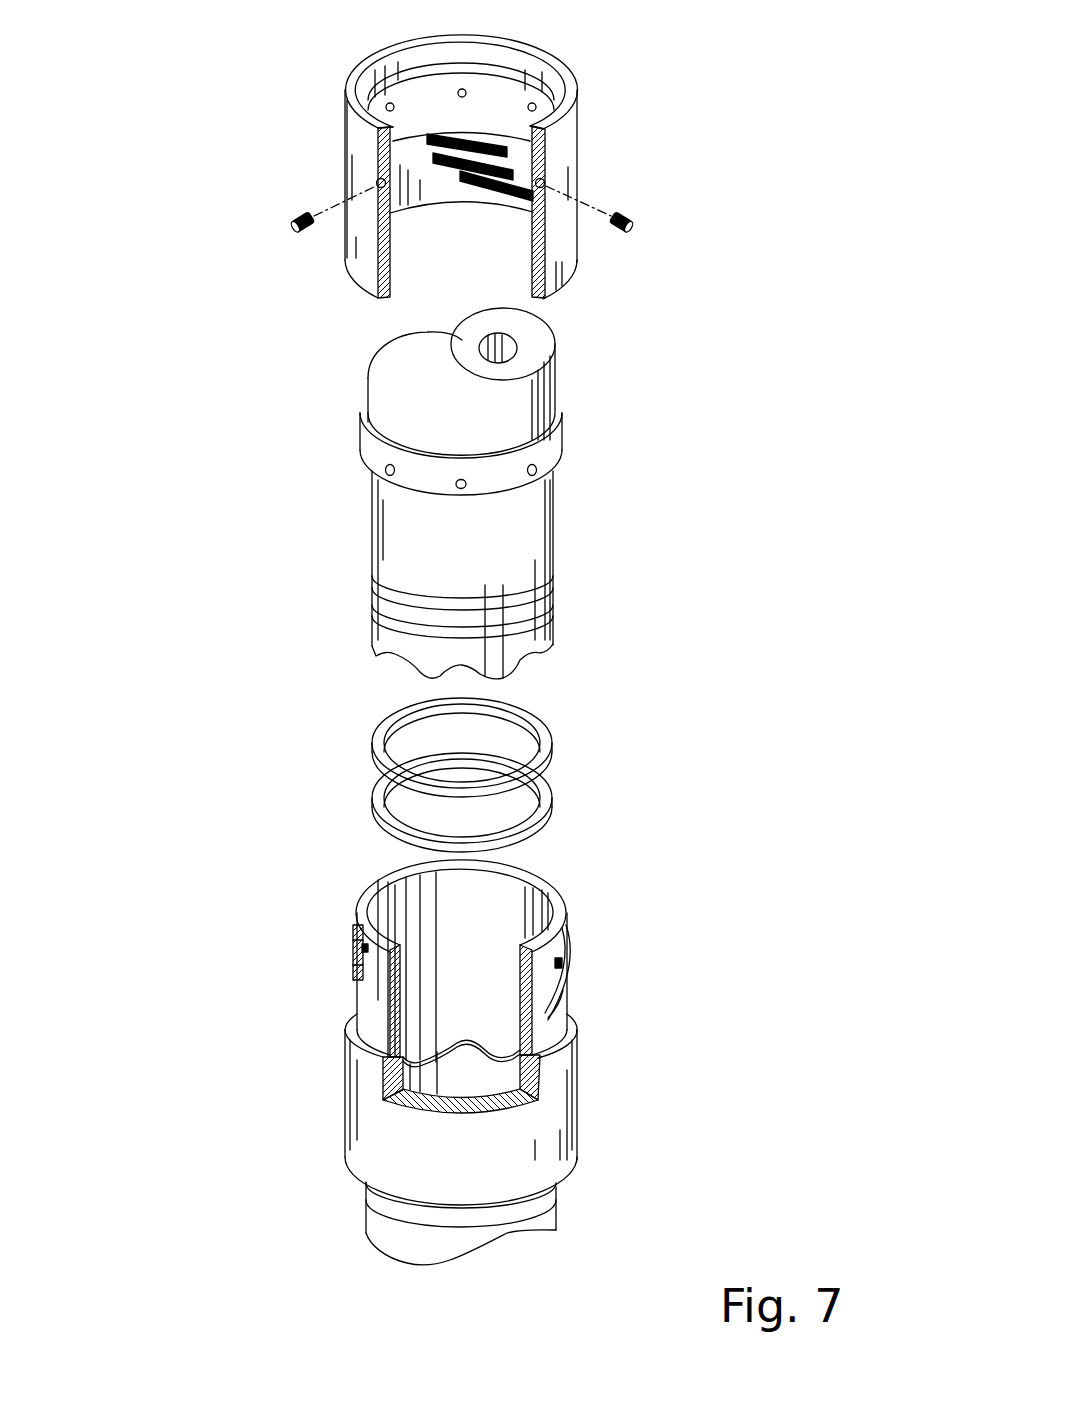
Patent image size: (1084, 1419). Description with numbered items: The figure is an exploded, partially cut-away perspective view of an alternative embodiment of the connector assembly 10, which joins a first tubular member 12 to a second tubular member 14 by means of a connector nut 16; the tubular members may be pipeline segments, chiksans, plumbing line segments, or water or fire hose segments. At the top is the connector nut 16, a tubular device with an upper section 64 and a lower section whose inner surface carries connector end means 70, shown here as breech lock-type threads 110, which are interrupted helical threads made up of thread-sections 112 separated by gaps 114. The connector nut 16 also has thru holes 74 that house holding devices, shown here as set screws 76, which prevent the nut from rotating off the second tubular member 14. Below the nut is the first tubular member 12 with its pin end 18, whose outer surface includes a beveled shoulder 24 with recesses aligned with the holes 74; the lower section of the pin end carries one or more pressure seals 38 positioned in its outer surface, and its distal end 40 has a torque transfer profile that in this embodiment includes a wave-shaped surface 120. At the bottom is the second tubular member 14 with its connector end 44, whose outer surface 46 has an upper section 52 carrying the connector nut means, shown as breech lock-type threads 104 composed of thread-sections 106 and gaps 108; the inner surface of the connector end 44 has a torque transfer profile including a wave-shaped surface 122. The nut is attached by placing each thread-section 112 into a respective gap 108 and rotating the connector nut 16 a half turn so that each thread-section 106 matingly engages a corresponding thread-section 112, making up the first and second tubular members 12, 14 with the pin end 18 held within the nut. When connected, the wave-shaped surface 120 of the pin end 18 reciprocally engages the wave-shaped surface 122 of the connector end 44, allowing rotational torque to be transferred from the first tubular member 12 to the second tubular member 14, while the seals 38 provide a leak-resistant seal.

The connector assembly 10 is at (222, 88).
The first tubular member 12 is at (548, 380).
The second tubular member 14 is at (380, 1220).
The connector nut 16 is at (568, 145).
The pin end 18 is at (372, 520).
The beveled shoulder 24 is at (365, 423).
The seals 38 is at (372, 753).
The distal end 40 is at (548, 650).
The connector end 44 is at (555, 1145).
The outer surface 46 is at (565, 1088).
The upper section 52 is at (352, 926).
The upper section 64 is at (572, 90).
The connector end means 70 is at (350, 253).
The thru holes 74 is at (376, 183).
The set screw 76 is at (293, 216).
The breech lock-type threads 104 is at (568, 987).
The thread-sections 106 is at (357, 950).
The gaps 108 is at (567, 962).
The breech lock-type threads 110 is at (500, 190).
The thread-sections 112 is at (443, 133).
The gaps 114 is at (513, 215).
The wave-shaped surface 120 is at (405, 664).
The wave-shaped surface 122 is at (457, 1043).